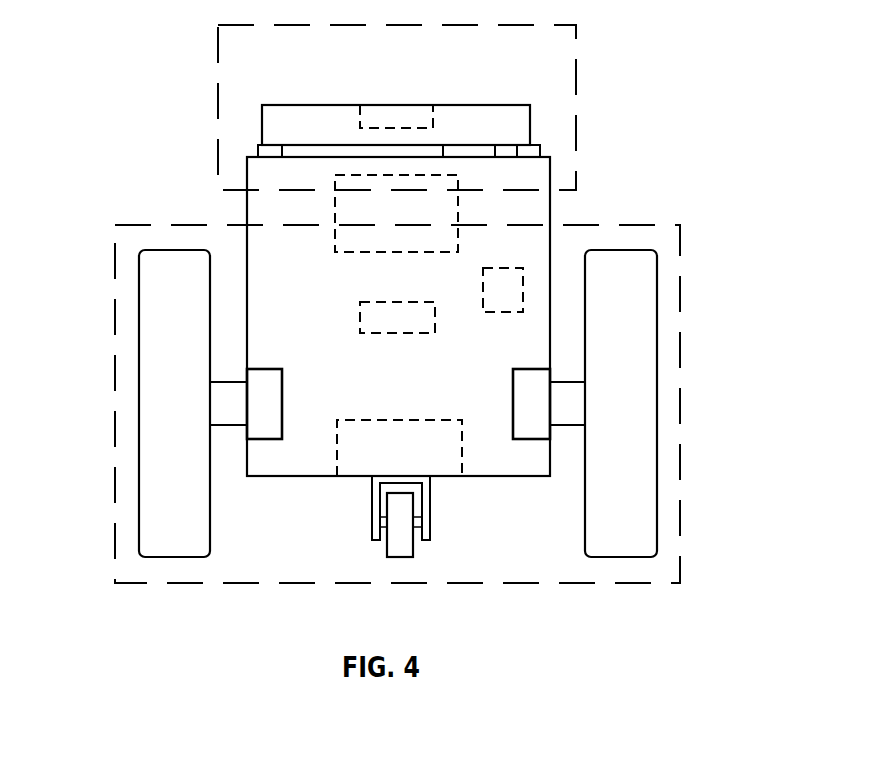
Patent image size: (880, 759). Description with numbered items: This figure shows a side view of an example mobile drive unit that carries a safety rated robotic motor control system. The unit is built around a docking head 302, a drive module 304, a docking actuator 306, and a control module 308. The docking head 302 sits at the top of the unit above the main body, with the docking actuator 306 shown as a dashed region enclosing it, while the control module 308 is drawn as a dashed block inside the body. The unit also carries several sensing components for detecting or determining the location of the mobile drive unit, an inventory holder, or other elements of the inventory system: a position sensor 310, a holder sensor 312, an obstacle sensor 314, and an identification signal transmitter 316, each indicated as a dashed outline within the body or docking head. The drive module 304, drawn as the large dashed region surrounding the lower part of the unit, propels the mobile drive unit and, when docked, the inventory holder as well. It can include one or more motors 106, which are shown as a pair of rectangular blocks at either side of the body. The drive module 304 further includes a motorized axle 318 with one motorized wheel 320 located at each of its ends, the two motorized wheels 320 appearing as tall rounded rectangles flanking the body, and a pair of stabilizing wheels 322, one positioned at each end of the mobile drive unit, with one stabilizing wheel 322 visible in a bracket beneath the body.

The motor 106 is at (263, 439).
The docking head 302 is at (330, 105).
The drive module 304 is at (680, 338).
The docking actuator 306 is at (577, 107).
The control module 308 is at (350, 255).
The position sensor 310 is at (386, 418).
The holder sensor 312 is at (435, 120).
The obstacle sensor 314 is at (405, 338).
The identification signal transmitter 316 is at (480, 296).
The motorized axle 318 is at (230, 380).
The motorized wheel 320 is at (147, 472).
The stabilizing wheel 322 is at (378, 540).